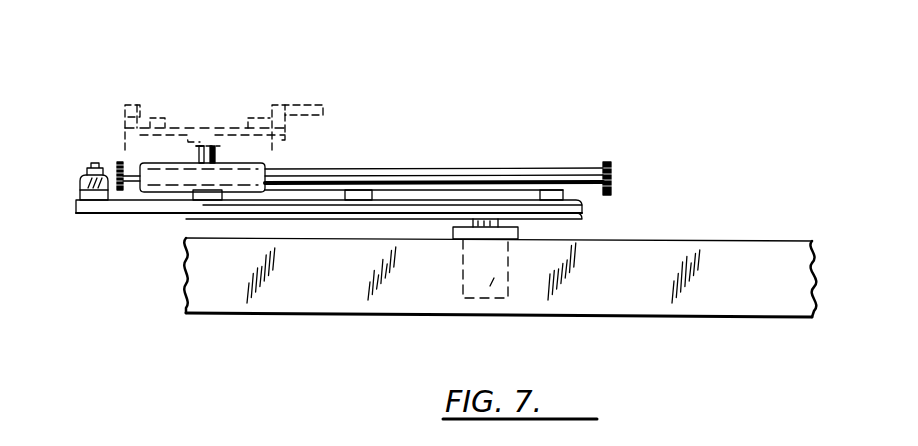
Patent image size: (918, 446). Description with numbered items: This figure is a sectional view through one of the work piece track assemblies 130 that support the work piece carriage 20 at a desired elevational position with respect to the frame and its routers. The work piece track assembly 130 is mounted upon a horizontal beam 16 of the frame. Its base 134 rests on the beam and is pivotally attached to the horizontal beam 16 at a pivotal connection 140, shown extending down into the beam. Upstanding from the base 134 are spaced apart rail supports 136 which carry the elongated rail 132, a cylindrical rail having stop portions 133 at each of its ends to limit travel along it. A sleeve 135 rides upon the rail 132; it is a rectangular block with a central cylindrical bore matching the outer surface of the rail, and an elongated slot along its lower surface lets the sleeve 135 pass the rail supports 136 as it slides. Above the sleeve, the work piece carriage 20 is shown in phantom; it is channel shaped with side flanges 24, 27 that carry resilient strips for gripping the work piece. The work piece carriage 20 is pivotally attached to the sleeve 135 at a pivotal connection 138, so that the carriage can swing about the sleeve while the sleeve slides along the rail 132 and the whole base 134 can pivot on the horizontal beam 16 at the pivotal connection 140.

The horizontal beam 16 is at (777, 285).
The work piece carriage 20 is at (218, 94).
The side flange 24 is at (125, 128).
The side flange 27 is at (306, 103).
The work piece track assembly 130 is at (536, 146).
The elongated rail 132 is at (476, 172).
The stop portion 133 is at (117, 167).
The base 134 is at (129, 205).
The sleeve 135 is at (250, 165).
The rail support 136 is at (204, 201).
The pivotal connection 138 is at (200, 150).
The pivotal connection 140 is at (520, 228).